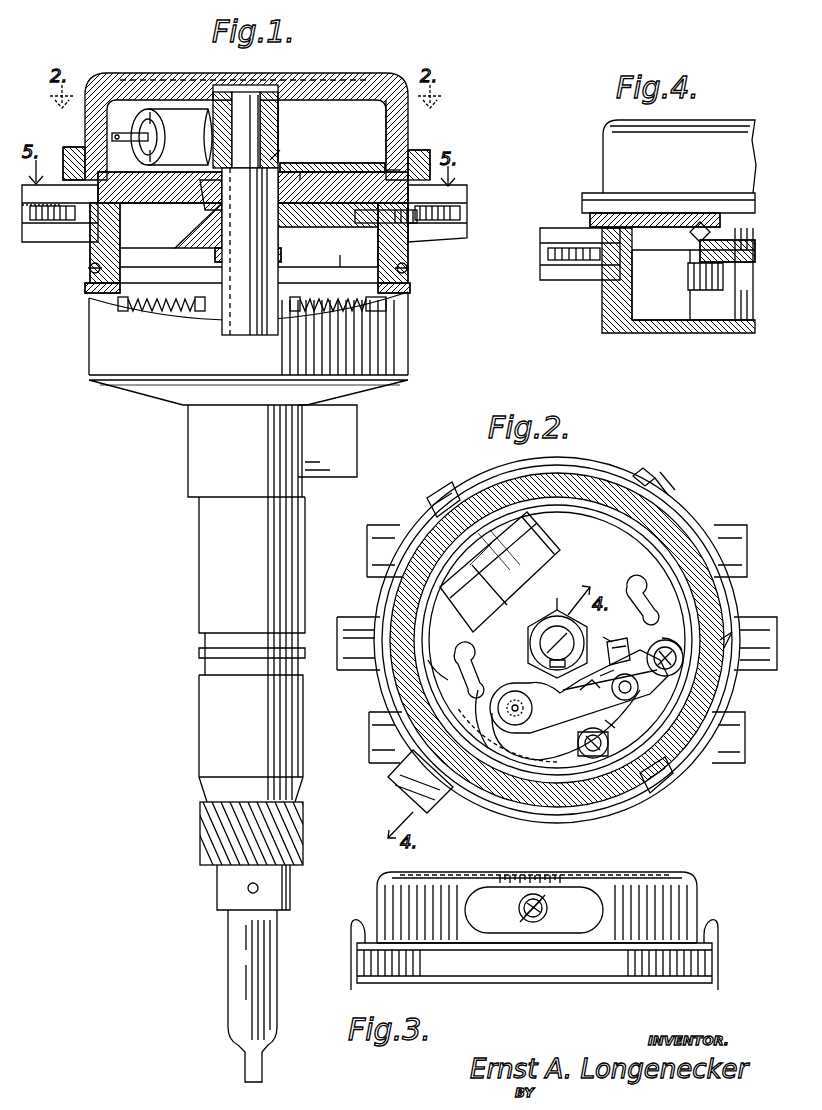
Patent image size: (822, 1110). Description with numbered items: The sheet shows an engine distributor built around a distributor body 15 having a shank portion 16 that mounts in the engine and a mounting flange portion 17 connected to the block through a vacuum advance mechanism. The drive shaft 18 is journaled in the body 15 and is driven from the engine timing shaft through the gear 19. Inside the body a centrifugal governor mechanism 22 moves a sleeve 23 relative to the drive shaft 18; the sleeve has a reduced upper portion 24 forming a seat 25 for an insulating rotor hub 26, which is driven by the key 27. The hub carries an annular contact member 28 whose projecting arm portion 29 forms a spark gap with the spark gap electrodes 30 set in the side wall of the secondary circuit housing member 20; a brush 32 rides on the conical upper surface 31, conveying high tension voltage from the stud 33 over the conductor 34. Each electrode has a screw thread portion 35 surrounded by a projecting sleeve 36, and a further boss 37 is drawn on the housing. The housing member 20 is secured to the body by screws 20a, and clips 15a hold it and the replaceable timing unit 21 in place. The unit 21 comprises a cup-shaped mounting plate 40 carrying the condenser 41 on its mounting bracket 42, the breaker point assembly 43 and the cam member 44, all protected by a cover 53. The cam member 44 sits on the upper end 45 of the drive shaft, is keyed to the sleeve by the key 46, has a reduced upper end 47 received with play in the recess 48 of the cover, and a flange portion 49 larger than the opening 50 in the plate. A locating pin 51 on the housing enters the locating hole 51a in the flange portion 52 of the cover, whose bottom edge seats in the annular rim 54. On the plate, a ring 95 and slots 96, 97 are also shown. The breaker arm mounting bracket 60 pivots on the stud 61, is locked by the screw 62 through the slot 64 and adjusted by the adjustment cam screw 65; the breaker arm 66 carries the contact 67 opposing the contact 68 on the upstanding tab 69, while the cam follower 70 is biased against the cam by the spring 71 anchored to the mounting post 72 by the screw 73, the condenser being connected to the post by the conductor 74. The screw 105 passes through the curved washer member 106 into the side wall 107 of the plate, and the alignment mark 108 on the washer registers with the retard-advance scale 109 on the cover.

In FIG. 1, the distributor body 15 is at (82, 356).
In FIG. 4, the distributor body 15 is at (603, 328).
In FIG. 2, the clips 15a is at (445, 486).
In FIG. 3, the clips 15a is at (350, 955).
In FIG. 1, the shank portion 16 is at (212, 620).
In FIG. 1, the mounting flange portion 17 is at (345, 432).
In FIG. 1, the drive shaft 18 is at (228, 980).
In FIG. 1, the gear 19 is at (220, 850).
In FIG. 1, the secondary circuit housing member 20 is at (430, 248).
In FIG. 1, the screws 20a is at (88, 272).
In FIG. 1, the replaceable timing unit 21 is at (378, 73).
In FIG. 3, the replaceable timing unit 21 is at (633, 869).
In FIG. 4, the replaceable timing unit 21 is at (593, 134).
In FIG. 1, the centrifugal governor mechanism 22 is at (385, 300).
In FIG. 1, the sleeve 23 is at (268, 256).
In FIG. 1, the upper portion of sleeve 24 is at (242, 238).
In FIG. 1, the seat 25 is at (328, 249).
In FIG. 1, the rotor hub 26 is at (178, 252).
In FIG. 4, the rotor hub 26 is at (661, 285).
In FIG. 1, the key 27 is at (240, 250).
In FIG. 1, the annular contact member 28 is at (185, 236).
In FIG. 1, the projecting arm portion 29 is at (328, 224).
In FIG. 1, the spark gap electrodes 30 is at (356, 257).
In FIG. 1, the conical upper surface 31 is at (185, 210).
In FIG. 4, the conical upper surface 31 is at (705, 290).
In FIG. 4, the brush 32 is at (700, 262).
In FIG. 4, the stud 33 is at (575, 265).
In FIG. 4, the conductor 34 is at (693, 238).
In FIG. 1, the screw thread portions 35 is at (462, 212).
In FIG. 1, the projecting sleeves 36 is at (50, 240).
In FIG. 2, the projecting sleeves 36 is at (360, 616).
In FIG. 4, the projecting sleeves 36 is at (548, 282).
In FIG. 2, the boss 37 is at (437, 797).
In FIG. 1, the mounting plate 40 is at (328, 163).
In FIG. 2, the mounting plate 40 is at (593, 490).
In FIG. 4, the mounting plate 40 is at (665, 213).
In FIG. 1, the condenser 41 is at (160, 112).
In FIG. 2, the condenser 41 is at (545, 540).
In FIG. 2, the mounting bracket 42 is at (557, 629).
In FIG. 2, the breaker point assembly 43 is at (629, 724).
In FIG. 1, the cam member 44 is at (290, 128).
In FIG. 2, the cam member 44 is at (558, 598).
In FIG. 1, the upper end of drive shaft 45 is at (290, 98).
In FIG. 1, the key 46 is at (287, 143).
In FIG. 1, the upper end of cam member 47 is at (215, 95).
In FIG. 1, the recess 48 is at (262, 85).
In FIG. 1, the flange portion 49 is at (147, 137).
In FIG. 1, the opening 50 is at (311, 165).
In FIG. 1, the locating pin 51 is at (372, 162).
In FIG. 1, the locating hole 51a is at (432, 168).
In FIG. 2, the locating hole 51a is at (735, 634).
In FIG. 1, the flange portion 52 is at (425, 155).
In FIG. 2, the flange portion 52 is at (730, 687).
In FIG. 3, the flange portion 52 is at (630, 985).
In FIG. 4, the flange portion 52 is at (582, 205).
In FIG. 1, the cover 53 is at (335, 74).
In FIG. 3, the cover 53 is at (690, 872).
In FIG. 1, the annular rim 54 is at (376, 162).
In FIG. 2, the breaker arm mounting bracket 60 is at (667, 638).
In FIG. 2, the stud 61 is at (515, 690).
In FIG. 2, the screw 62 is at (670, 642).
In FIG. 2, the slot 64 is at (644, 695).
In FIG. 2, the adjustment cam screw 65 is at (625, 700).
In FIG. 2, the breaker arm 66 is at (540, 726).
In FIG. 2, the breaker point contact 67 is at (629, 653).
In FIG. 2, the breaker point contact 68 is at (601, 689).
In FIG. 2, the upstanding tab 69 is at (618, 624).
In FIG. 2, the cam follower 70 is at (596, 656).
In FIG. 2, the spring 71 is at (471, 719).
In FIG. 2, the mounting post 72 is at (598, 765).
In FIG. 2, the screw 73 is at (607, 743).
In FIG. 2, the conductor 74 is at (445, 674).
In FIG. 2, the plate ring 95 is at (640, 780).
In FIG. 2, the slot 96 is at (478, 662).
In FIG. 2, the slot 97 is at (640, 592).
In FIG. 2, the screw 105 is at (645, 470).
In FIG. 3, the screw 105 is at (535, 920).
In FIG. 2, the curved washer member 106 is at (675, 492).
In FIG. 3, the curved washer member 106 is at (598, 913).
In FIG. 2, the side wall 107 is at (612, 520).
In FIG. 3, the alignment mark 108 is at (540, 896).
In FIG. 3, the retard-advance scale 109 is at (525, 878).